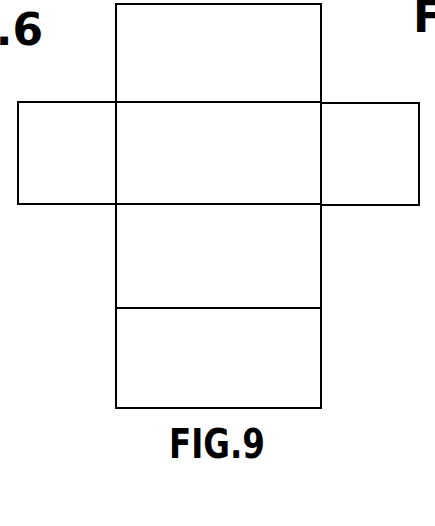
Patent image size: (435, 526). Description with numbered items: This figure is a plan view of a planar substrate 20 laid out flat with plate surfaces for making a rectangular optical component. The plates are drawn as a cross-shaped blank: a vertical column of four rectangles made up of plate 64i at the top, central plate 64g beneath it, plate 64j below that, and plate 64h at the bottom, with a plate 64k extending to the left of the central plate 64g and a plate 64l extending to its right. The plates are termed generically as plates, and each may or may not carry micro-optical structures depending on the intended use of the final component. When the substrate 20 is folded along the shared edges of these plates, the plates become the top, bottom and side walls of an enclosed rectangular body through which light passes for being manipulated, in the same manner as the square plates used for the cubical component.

The planar substrate 20 is at (85, 236).
The plate 64g is at (242, 169).
The plate 64h is at (243, 374).
The plate 64i is at (240, 63).
The plate 64j is at (240, 274).
The plate 64k is at (87, 164).
The plate 64l is at (378, 167).